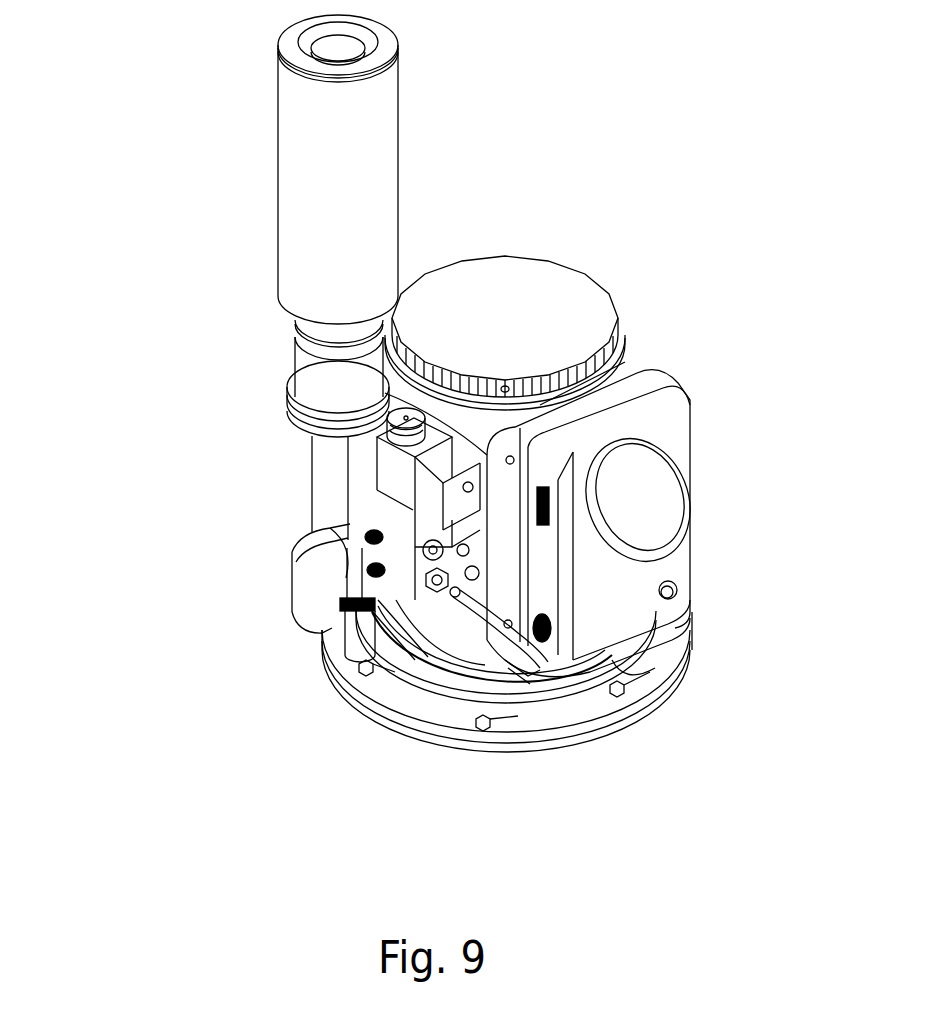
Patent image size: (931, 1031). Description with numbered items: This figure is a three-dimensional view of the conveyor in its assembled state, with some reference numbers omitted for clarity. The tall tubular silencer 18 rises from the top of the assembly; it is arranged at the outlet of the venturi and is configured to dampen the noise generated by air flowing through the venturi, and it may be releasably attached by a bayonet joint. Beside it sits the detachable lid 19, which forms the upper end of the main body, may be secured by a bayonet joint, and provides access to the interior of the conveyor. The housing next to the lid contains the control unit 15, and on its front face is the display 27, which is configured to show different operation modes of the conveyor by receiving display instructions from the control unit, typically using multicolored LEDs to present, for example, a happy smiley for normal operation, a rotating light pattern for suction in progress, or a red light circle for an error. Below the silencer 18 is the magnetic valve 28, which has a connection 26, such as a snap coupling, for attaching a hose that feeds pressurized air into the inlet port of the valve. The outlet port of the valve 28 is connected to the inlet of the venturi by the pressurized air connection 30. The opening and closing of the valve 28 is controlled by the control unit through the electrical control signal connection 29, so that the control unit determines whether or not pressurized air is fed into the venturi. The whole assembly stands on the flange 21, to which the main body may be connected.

The silencer 18 is at (265, 195).
The lid 19 is at (555, 262).
The control unit 15 is at (668, 375).
The display 27 is at (632, 500).
The magnetic valve 28 is at (380, 507).
The pressurized air connection 30 is at (345, 582).
The flange 21 is at (357, 717).
The connection 26 is at (448, 605).
The electrical control signal connection 29 is at (518, 677).